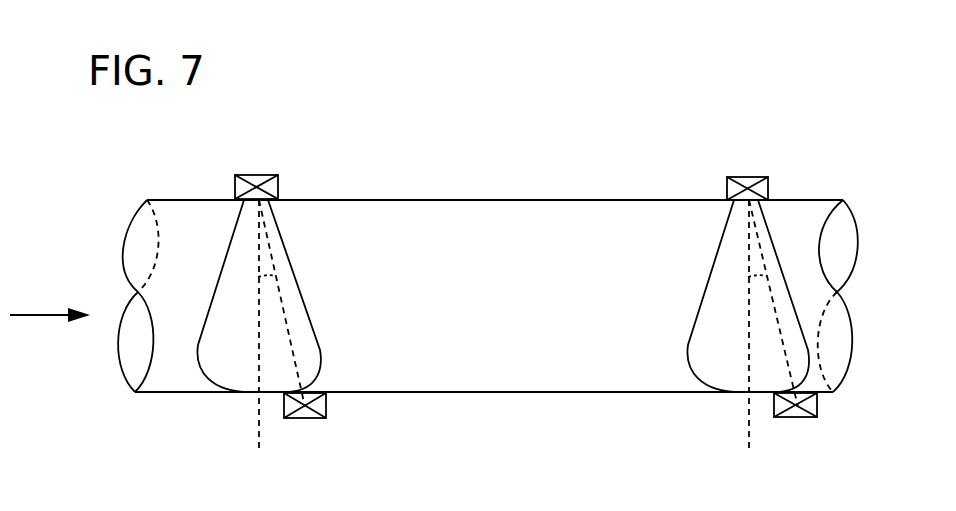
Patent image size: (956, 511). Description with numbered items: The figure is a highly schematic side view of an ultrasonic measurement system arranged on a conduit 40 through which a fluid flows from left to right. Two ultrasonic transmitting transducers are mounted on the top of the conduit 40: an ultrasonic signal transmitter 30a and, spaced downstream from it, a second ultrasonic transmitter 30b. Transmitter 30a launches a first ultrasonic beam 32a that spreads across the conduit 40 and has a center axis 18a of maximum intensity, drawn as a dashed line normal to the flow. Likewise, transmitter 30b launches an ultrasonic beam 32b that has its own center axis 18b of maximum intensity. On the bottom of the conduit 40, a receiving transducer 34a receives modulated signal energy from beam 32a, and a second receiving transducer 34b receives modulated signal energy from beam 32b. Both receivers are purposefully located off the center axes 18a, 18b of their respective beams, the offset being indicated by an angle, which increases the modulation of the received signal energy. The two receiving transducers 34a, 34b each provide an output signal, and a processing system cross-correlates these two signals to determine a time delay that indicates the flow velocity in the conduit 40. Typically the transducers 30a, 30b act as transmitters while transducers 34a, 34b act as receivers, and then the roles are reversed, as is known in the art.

The conduit 40 is at (459, 200).
The ultrasonic signal transmitter 30a is at (258, 175).
The ultrasonic transmitter 30b is at (745, 177).
The first ultrasonic beam 32a is at (303, 287).
The ultrasonic beam 32b is at (798, 302).
The receiving transducer 34a is at (326, 415).
The receiving transducer 34b is at (818, 405).
The center axis 18a is at (259, 445).
The center axis 18b is at (749, 437).